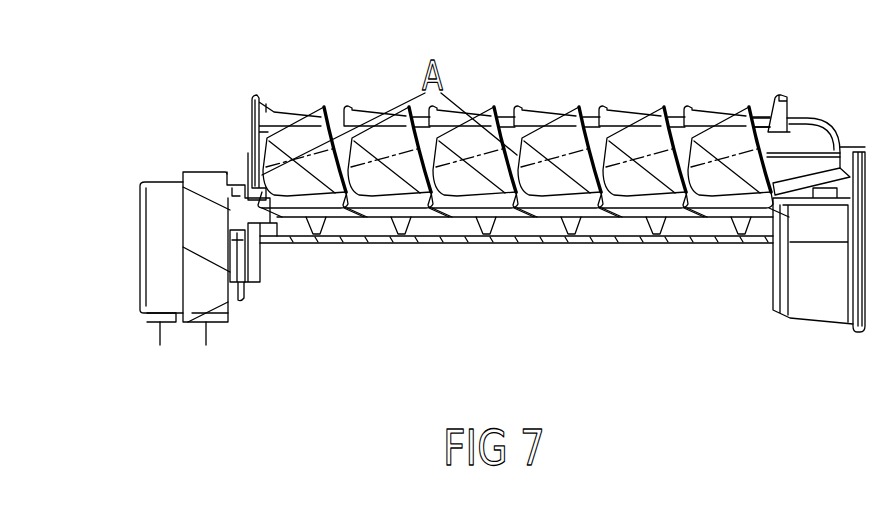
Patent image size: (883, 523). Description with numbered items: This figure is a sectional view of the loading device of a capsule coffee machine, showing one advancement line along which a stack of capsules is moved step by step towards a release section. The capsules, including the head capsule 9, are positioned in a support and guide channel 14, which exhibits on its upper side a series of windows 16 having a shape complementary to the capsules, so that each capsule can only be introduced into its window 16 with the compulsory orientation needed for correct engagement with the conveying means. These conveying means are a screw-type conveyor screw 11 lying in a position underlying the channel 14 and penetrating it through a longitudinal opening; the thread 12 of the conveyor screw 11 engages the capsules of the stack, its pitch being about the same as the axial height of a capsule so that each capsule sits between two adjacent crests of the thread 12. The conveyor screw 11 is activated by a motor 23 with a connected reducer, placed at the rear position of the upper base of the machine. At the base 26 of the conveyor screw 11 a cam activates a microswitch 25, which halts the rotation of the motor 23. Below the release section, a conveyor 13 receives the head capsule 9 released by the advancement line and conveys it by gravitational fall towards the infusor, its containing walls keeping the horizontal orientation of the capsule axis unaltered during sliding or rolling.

The head capsule 9 is at (739, 130).
The conveyor screw 11 is at (453, 238).
The thread 12 is at (643, 233).
The conveyor 13 is at (811, 340).
The support and guide channel 14 is at (263, 118).
The windows 16 is at (614, 117).
The motor 23 is at (200, 220).
The microswitch 25 is at (247, 290).
The base 26 is at (265, 240).